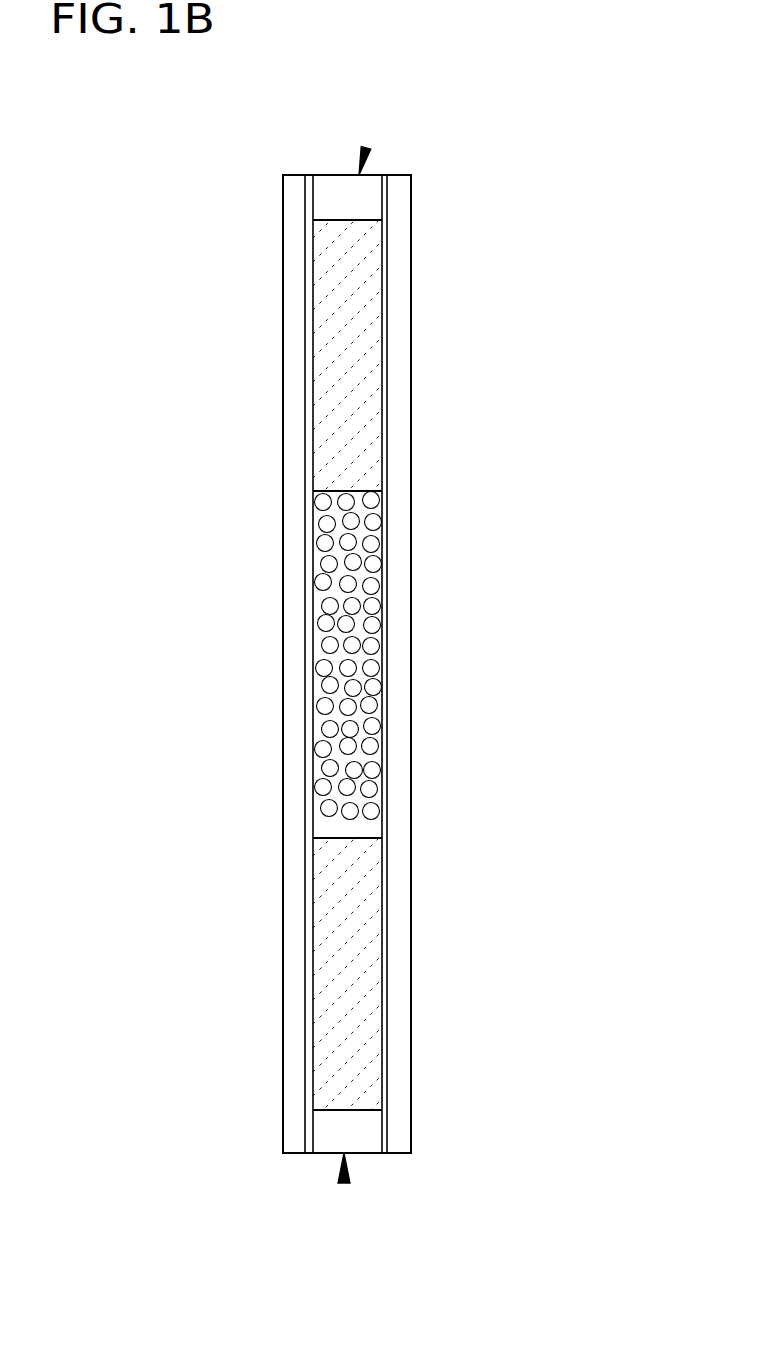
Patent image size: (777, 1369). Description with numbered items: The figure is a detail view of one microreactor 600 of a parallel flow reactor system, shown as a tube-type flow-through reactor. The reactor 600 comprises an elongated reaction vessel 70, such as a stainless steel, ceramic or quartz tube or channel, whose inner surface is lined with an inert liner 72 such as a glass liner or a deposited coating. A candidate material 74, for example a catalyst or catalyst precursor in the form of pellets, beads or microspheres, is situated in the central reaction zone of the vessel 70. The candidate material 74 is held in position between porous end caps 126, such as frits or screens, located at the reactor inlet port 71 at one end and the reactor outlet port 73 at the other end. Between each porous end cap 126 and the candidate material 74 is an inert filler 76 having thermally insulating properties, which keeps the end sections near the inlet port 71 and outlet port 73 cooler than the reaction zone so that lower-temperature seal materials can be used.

The microreactor 600 is at (440, 220).
The elongated reaction vessel 70 is at (292, 321).
The reactor inlet port 71 is at (366, 148).
The liner 72 is at (312, 455).
The reactor outlet port 73 is at (344, 1183).
The candidate material 74 is at (350, 690).
The inert filler 76 is at (365, 405).
The porous end caps 126 is at (320, 172).